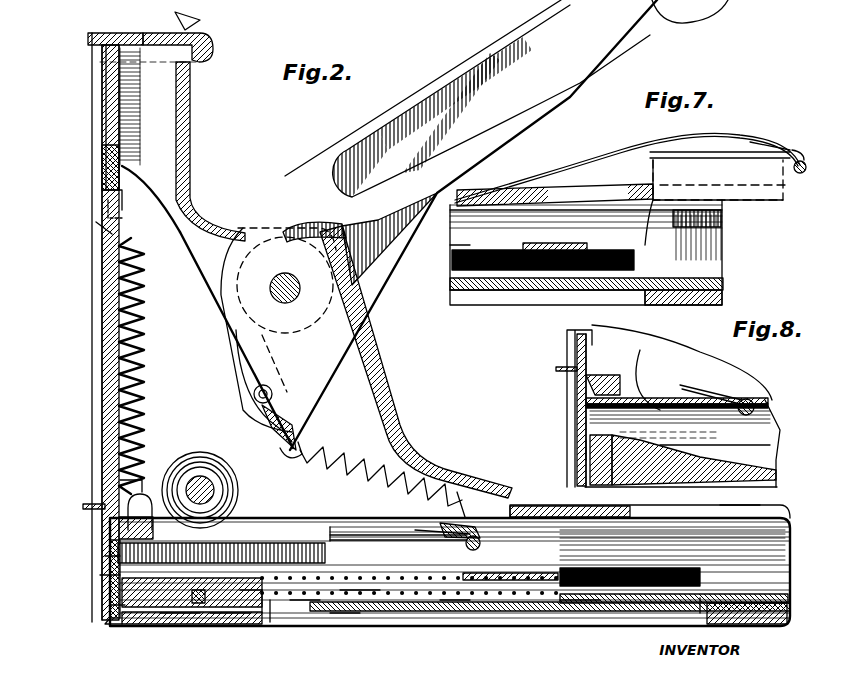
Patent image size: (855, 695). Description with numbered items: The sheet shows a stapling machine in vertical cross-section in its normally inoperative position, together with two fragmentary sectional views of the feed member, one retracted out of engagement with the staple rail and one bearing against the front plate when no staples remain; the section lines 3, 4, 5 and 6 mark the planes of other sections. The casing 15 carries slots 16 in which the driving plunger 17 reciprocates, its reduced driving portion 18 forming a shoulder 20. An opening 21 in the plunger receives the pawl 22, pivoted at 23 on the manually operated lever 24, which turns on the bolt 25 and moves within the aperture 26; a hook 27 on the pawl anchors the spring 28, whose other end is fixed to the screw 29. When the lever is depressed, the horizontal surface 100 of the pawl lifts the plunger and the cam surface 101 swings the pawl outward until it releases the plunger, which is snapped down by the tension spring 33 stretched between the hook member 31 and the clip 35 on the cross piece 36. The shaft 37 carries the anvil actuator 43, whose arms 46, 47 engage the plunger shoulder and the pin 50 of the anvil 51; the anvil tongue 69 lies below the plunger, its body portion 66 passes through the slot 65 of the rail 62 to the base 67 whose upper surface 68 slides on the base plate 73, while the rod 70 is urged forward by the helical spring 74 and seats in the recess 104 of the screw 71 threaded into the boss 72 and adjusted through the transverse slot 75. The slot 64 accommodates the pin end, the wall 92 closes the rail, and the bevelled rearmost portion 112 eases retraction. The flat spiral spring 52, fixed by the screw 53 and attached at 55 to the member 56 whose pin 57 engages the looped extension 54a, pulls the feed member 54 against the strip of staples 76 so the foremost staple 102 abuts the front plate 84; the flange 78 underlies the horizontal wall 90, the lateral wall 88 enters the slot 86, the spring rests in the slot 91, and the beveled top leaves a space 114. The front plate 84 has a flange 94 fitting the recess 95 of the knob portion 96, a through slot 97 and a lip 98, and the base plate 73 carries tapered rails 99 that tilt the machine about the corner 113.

In FIG. 2, the section line 3- 3 is at (126, 30).
In FIG. 2, the section line 4- 4 is at (420, 675).
In FIG. 2, the section line 5- 5 is at (75, 405).
In FIG. 2, the section line 6- 6 is at (73, 540).
In FIG. 2, the casing 15 is at (186, 130).
In FIG. 7, the casing 15 is at (518, 192).
In FIG. 2, the slots 16 is at (106, 128).
In FIG. 2, the driving plunger 17 is at (112, 322).
In FIG. 2, the driving portion 18 is at (110, 592).
In FIG. 8, the driving portion 18 is at (592, 348).
In FIG. 2, the shoulder 20 is at (100, 471).
In FIG. 2, the opening 21 is at (100, 228).
In FIG. 2, the pawl 22 is at (206, 226).
In FIG. 2, the pivot 23 is at (274, 393).
In FIG. 2, the manually operated lever 24 is at (365, 135).
In FIG. 2, the bolt 25 is at (300, 287).
In FIG. 2, the aperture 26 is at (362, 336).
In FIG. 2, the hook 27 is at (302, 444).
In FIG. 2, the spring 28 is at (350, 458).
In FIG. 2, the screw 29 is at (470, 500).
In FIG. 2, the hook member 31 is at (142, 196).
In FIG. 2, the tension spring 33 is at (140, 374).
In FIG. 2, the clip 35 is at (150, 478).
In FIG. 2, the cross piece 36 is at (118, 526).
In FIG. 8, the cross piece 36 is at (596, 386).
In FIG. 2, the shaft 37 is at (240, 500).
In FIG. 2, the anvil actuator 43 is at (230, 480).
In FIG. 2, the arm 46 is at (130, 492).
In FIG. 2, the arm 47 is at (146, 626).
In FIG. 2, the pin 50 is at (216, 630).
In FIG. 2, the anvil 51 is at (172, 630).
In FIG. 8, the anvil 51 is at (762, 472).
In FIG. 2, the flat spiral spring 52 is at (200, 466).
In FIG. 7, the flat spiral spring 52 is at (604, 170).
In FIG. 8, the flat spiral spring 52 is at (652, 348).
In FIG. 2, the screw 53 is at (213, 462).
In FIG. 2, the feed member 54 is at (358, 534).
In FIG. 7, the feed member 54 is at (730, 152).
In FIG. 8, the feed member 54 is at (660, 398).
In FIG. 2, the looped extension 54a is at (442, 575).
In FIG. 8, the looped extension 54a is at (772, 424).
In FIG. 2, the attachment point 55 is at (430, 522).
In FIG. 7, the attachment point 55 is at (770, 142).
In FIG. 8, the attachment point 55 is at (700, 384).
In FIG. 2, the member 56 is at (482, 525).
In FIG. 7, the member 56 is at (798, 150).
In FIG. 8, the member 56 is at (746, 398).
In FIG. 2, the pin 57 is at (482, 540).
In FIG. 7, the pin 57 is at (802, 173).
In FIG. 8, the pin 57 is at (756, 405).
In FIG. 2, the staple-carrying rail 62 is at (772, 546).
In FIG. 7, the staple-carrying rail 62 is at (728, 255).
In FIG. 2, the slot 64 is at (258, 628).
In FIG. 8, the slot 64 is at (775, 455).
In FIG. 2, the slot 65 is at (300, 630).
In FIG. 2, the body portion 66 is at (132, 628).
In FIG. 2, the base 67 is at (200, 626).
In FIG. 2, the upper surface 68 is at (230, 626).
In FIG. 2, the tongue 69 is at (200, 18).
In FIG. 2, the rod 70 is at (360, 614).
In FIG. 2, the screw 71 is at (612, 620).
In FIG. 7, the screw 71 is at (456, 258).
In FIG. 2, the internally threaded boss 72 is at (642, 620).
In FIG. 7, the internally threaded boss 72 is at (590, 248).
In FIG. 2, the base plate 73 is at (340, 628).
In FIG. 7, the base plate 73 is at (515, 292).
In FIG. 2, the helical spring 74 is at (398, 612).
In FIG. 2, the transverse slot 75 is at (700, 578).
In FIG. 2, the strip of staples 76 is at (296, 540).
In FIG. 7, the flange 78 is at (742, 240).
In FIG. 8, the flange 78 is at (702, 440).
In FIG. 2, the front plate 84 is at (104, 372).
In FIG. 8, the front plate 84 is at (580, 348).
In FIG. 2, the slot 86 is at (744, 506).
In FIG. 7, the slot 86 is at (652, 208).
In FIG. 7, the lateral wall 88 is at (780, 198).
In FIG. 7, the horizontal wall 90 is at (640, 150).
In FIG. 2, the slot 91 is at (640, 511).
In FIG. 7, the slot 91 is at (592, 204).
In FIG. 2, the wall 92 is at (116, 610).
In FIG. 8, the wall 92 is at (592, 446).
In FIG. 2, the flange 94 is at (116, 38).
In FIG. 2, the recess 95 is at (143, 68).
In FIG. 2, the knob portion 96 is at (204, 58).
In FIG. 2, the through slot 97 is at (102, 576).
In FIG. 2, the lip 98 is at (90, 508).
In FIG. 8, the lip 98 is at (560, 369).
In FIG. 2, the rails 99 is at (450, 620).
In FIG. 2, the horizontal surface 100 is at (104, 192).
In FIG. 2, the cam surface 101 is at (106, 215).
In FIG. 2, the foremost staple 102 is at (110, 557).
In FIG. 2, the recess 104 is at (582, 620).
In FIG. 2, the rearmost portion 112 is at (276, 628).
In FIG. 2, the corner 113 is at (788, 626).
In FIG. 8, the space 114 is at (590, 409).